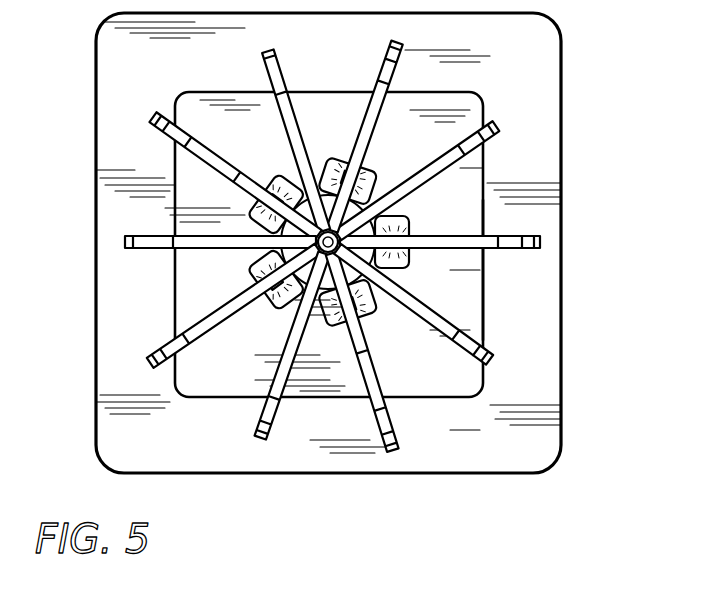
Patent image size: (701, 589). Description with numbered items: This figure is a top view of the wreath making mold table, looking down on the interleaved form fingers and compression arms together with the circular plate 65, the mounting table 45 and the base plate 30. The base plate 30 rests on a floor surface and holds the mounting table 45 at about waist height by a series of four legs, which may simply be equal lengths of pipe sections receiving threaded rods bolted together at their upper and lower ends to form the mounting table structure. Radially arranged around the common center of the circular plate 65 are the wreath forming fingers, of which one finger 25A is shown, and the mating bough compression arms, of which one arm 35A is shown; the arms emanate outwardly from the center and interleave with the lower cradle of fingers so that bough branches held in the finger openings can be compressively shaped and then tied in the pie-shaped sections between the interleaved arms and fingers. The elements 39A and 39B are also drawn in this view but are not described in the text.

The base plate 30 is at (543, 366).
The mounting table 45 is at (455, 104).
The plate member 39A is at (483, 310).
The plate member 39B is at (317, 375).
The circular plate 65 is at (371, 193).
The wreath forming finger 25A is at (537, 228).
The bough compression arm 35A is at (490, 362).